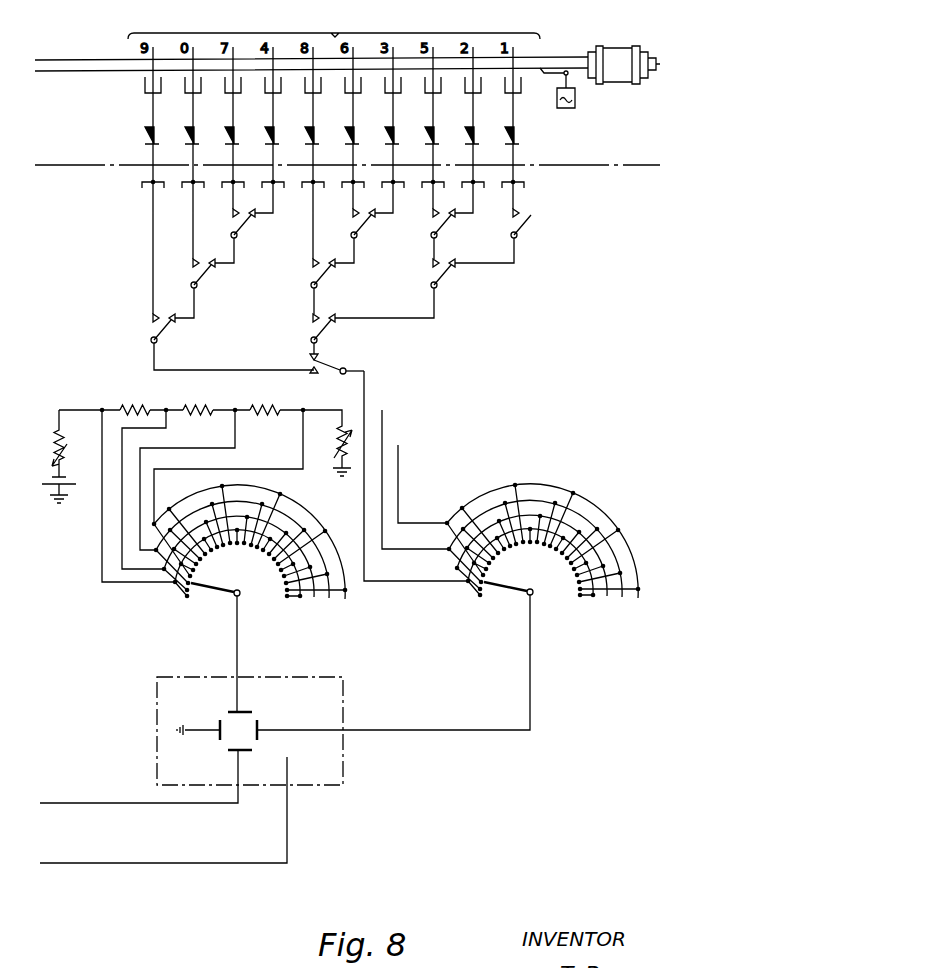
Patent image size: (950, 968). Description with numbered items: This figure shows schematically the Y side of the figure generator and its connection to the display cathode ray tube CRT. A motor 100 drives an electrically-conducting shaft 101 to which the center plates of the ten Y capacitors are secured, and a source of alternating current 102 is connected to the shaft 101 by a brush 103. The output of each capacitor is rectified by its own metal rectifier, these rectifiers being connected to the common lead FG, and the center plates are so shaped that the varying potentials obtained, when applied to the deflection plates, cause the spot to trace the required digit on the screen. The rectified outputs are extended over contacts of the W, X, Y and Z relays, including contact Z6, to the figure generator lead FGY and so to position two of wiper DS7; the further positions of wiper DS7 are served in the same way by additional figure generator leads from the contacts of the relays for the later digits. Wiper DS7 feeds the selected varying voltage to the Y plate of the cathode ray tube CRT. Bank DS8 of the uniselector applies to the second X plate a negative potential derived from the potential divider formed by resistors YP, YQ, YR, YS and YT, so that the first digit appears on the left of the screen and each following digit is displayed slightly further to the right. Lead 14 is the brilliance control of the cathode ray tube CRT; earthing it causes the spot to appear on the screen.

The motor 100 is at (592, 49).
The electrically-conducting shaft 101 is at (66, 60).
The source of alternating current 102 is at (577, 100).
The brush 103 is at (547, 82).
The lead 14 is at (288, 766).
The figure generator Y lead FGY is at (334, 24).
The figure generator common lead FG is at (347, 147).
The cathode ray tube CRT is at (250, 731).
The wiper DS7 is at (542, 549).
The bank DS8 is at (249, 550).
The contact Z6 is at (337, 361).
The potential divider resistor YP is at (65, 456).
The potential divider resistor YQ is at (135, 401).
The potential divider resistor YR is at (198, 401).
The potential divider resistor YS is at (265, 401).
The potential divider resistor YT is at (330, 443).